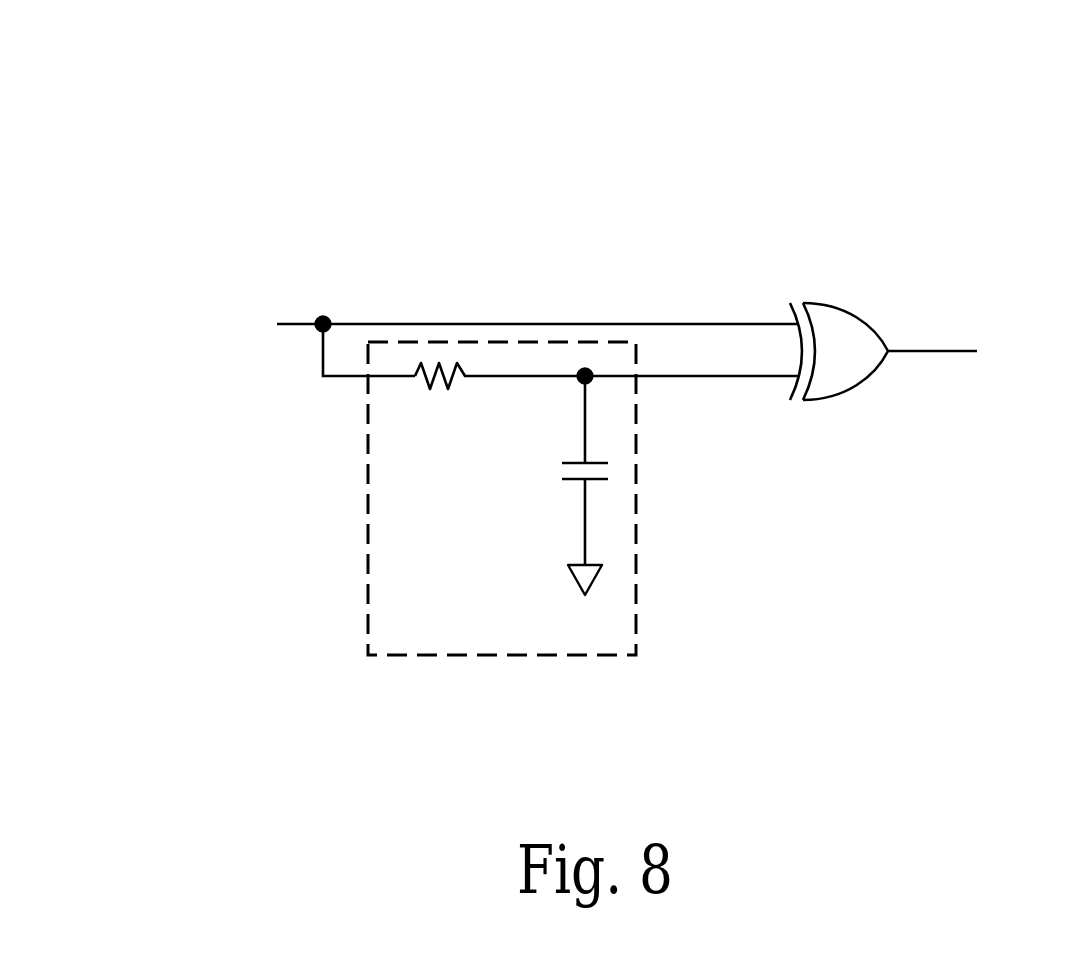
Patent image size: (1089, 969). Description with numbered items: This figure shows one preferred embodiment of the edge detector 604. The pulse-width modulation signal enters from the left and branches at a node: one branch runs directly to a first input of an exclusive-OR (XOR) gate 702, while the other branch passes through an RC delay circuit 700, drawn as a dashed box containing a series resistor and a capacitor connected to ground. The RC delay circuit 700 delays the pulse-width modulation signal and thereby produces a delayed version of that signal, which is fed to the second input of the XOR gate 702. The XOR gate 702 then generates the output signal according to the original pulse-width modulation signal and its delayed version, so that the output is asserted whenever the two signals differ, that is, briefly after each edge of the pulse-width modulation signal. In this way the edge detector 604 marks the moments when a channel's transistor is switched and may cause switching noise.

The edge detector 604 is at (978, 137).
The RC delay circuit 700 is at (368, 497).
The exclusive-OR (XOR) gate 702 is at (840, 305).